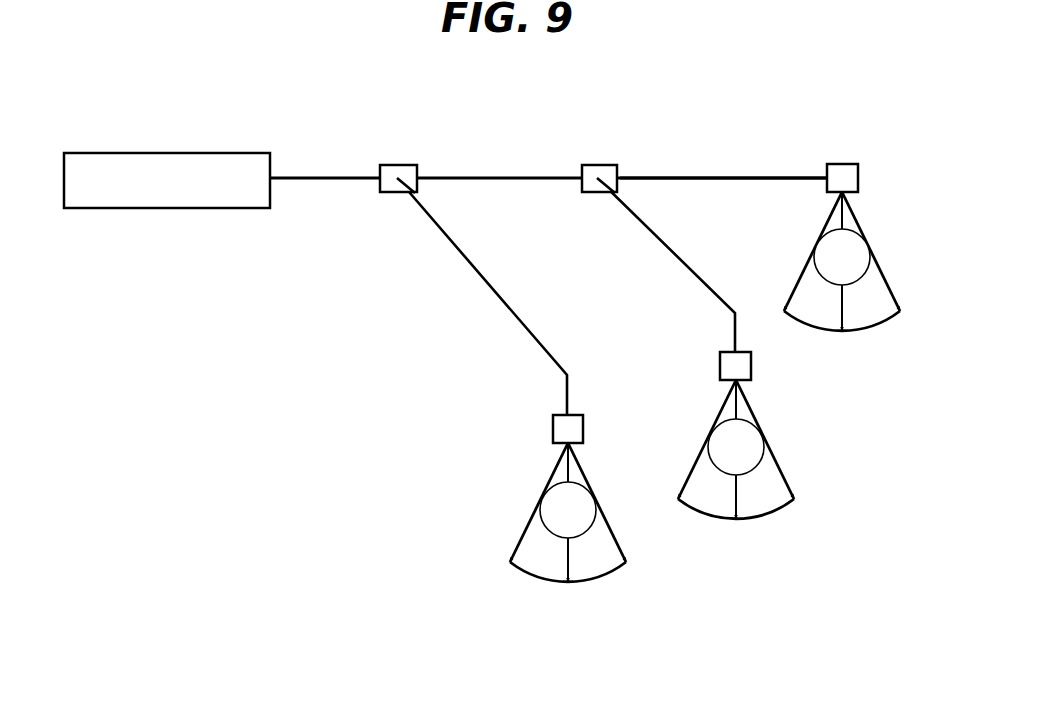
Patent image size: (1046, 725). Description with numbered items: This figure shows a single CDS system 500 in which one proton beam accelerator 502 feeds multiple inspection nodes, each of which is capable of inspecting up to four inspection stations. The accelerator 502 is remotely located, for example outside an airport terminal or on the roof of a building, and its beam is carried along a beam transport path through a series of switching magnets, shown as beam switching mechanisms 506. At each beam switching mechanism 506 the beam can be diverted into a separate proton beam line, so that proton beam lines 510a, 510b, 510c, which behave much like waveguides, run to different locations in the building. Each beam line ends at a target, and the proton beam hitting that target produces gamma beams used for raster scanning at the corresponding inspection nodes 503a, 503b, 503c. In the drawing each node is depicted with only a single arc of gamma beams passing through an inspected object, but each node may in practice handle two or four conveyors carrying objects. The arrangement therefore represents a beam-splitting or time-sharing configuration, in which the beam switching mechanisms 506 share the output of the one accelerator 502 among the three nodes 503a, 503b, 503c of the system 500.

The CDS system 500 is at (787, 138).
The proton beam accelerator 502 is at (166, 152).
The beam switching mechanism 506 is at (390, 193).
The proton beam line 510a is at (502, 305).
The proton beam line 510b is at (690, 280).
The proton beam line 510c is at (721, 176).
The inspection node 503a is at (525, 430).
The inspection node 503b is at (777, 365).
The inspection node 503c is at (890, 177).